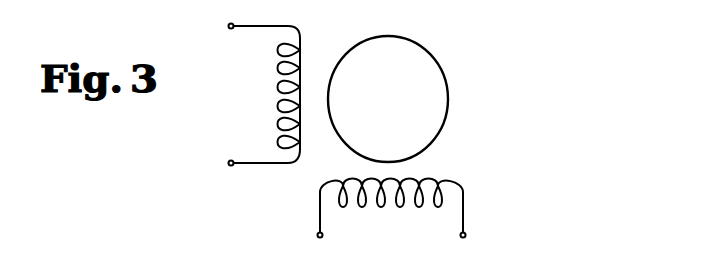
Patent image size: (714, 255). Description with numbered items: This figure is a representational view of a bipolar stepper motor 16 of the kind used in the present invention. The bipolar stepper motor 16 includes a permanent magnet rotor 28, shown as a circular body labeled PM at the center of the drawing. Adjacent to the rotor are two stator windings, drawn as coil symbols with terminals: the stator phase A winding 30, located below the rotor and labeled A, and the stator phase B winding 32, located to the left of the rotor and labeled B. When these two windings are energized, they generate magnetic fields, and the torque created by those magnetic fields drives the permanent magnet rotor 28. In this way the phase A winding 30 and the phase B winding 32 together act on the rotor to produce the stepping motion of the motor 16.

The bipolar stepper motor 16 is at (454, 57).
The permanent magnet rotor 28 is at (447, 108).
The stator phase A winding 30 is at (319, 207).
The stator phase B winding 32 is at (272, 165).